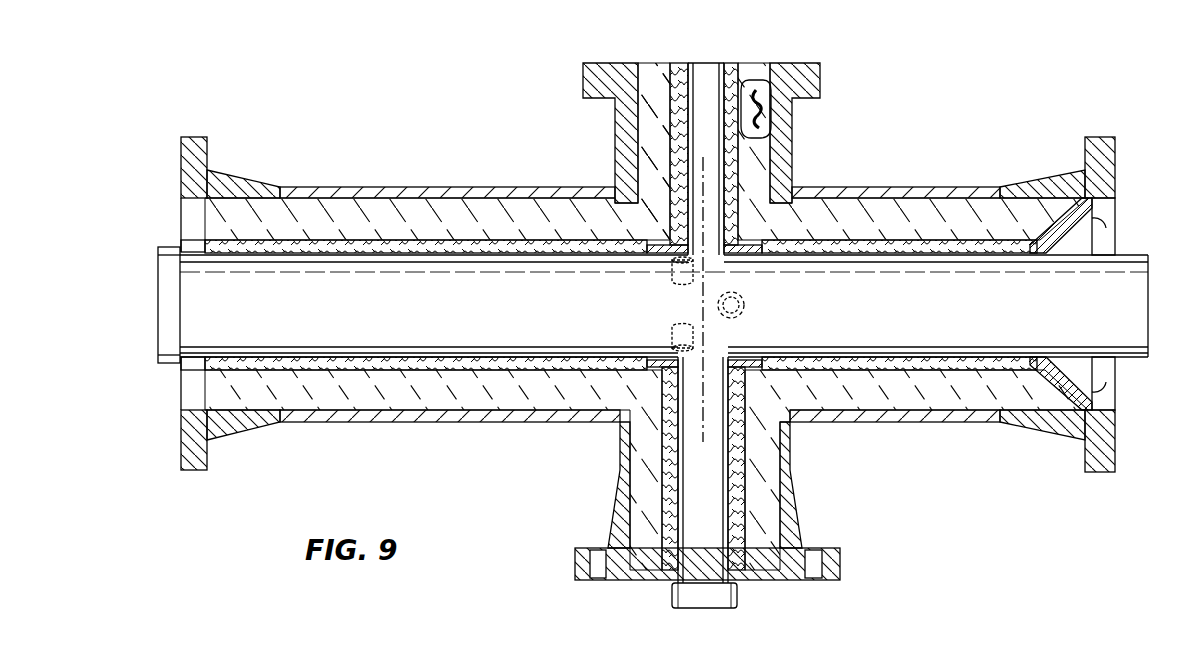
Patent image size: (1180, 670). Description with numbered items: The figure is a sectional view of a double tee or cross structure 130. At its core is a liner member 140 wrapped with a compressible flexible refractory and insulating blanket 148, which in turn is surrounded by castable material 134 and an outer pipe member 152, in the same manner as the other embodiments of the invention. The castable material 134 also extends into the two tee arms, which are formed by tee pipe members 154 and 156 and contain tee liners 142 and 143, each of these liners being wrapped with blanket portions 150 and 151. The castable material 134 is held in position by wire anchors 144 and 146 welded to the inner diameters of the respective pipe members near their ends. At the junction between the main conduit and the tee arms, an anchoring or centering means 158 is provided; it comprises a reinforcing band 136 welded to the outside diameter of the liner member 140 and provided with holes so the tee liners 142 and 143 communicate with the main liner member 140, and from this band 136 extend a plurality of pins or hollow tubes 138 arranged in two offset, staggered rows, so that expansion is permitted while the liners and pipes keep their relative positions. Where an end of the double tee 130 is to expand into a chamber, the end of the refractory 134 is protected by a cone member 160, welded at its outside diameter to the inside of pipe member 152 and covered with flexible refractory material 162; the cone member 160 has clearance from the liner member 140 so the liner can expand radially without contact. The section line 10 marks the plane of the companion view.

The section line 10 is at (703, 162).
The double tee or cross structure 130 is at (882, 126).
The castable material 134 is at (882, 208).
The reinforcing band 136 is at (652, 257).
The pins or hollow tubes 138 is at (752, 322).
The liner member 140 is at (938, 262).
The tee liner 142 is at (666, 455).
The tee liner 143 is at (693, 78).
The wire anchor 144 is at (757, 94).
The wire anchor 146 is at (1028, 433).
The compressible flexible refractory and insulating blanket 148 is at (930, 420).
The blanket portion 150 is at (742, 507).
The blanket portion 151 is at (730, 68).
The pipe member 152 is at (492, 424).
The tee pipe member 154 is at (818, 436).
The tee pipe member 156 is at (620, 118).
The anchoring or centering means 158 is at (650, 322).
The cone member 160 is at (1117, 200).
The flexible refractory material 162 is at (1036, 203).